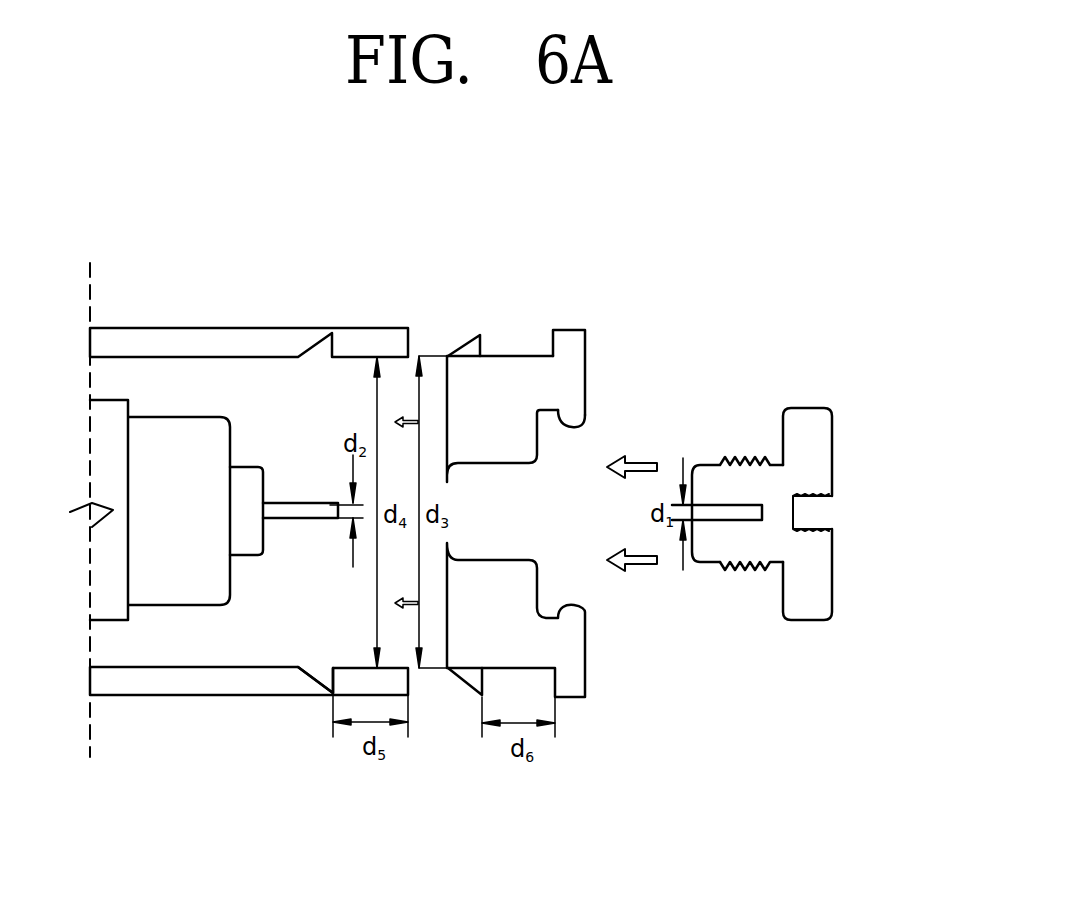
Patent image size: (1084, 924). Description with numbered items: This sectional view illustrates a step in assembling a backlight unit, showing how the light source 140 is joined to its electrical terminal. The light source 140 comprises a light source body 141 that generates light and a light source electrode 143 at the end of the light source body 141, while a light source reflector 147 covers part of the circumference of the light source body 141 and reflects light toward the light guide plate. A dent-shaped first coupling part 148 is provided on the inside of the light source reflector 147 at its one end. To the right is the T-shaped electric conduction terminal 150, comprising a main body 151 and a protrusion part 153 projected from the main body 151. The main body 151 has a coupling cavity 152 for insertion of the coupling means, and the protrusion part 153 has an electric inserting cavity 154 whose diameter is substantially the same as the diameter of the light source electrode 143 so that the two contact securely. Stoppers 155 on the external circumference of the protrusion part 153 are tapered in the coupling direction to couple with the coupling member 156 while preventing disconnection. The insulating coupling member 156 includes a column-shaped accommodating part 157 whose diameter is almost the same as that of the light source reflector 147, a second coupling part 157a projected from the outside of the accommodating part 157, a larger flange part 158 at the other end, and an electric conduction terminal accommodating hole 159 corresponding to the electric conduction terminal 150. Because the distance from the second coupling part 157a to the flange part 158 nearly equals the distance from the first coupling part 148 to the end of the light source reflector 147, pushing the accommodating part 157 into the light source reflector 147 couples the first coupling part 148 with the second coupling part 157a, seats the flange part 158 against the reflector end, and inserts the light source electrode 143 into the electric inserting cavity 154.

The light source 140 is at (214, 637).
The light source body 141 is at (108, 613).
The light source electrode 143 is at (273, 512).
The light source reflector 147 is at (390, 687).
The first coupling part 148 is at (324, 672).
The electric conduction terminal 150 is at (800, 505).
The main body 151 is at (808, 618).
The coupling cavity 152 is at (833, 511).
The protrusion part 153 is at (772, 547).
The electric inserting cavity 154 is at (703, 508).
The stoppers 155 is at (732, 568).
The coupling member 156 is at (563, 416).
The accommodating part 157 is at (517, 356).
The second coupling part 157a is at (453, 356).
The flange part 158 is at (568, 330).
The electric conduction terminal accommodating hole 159 is at (590, 421).